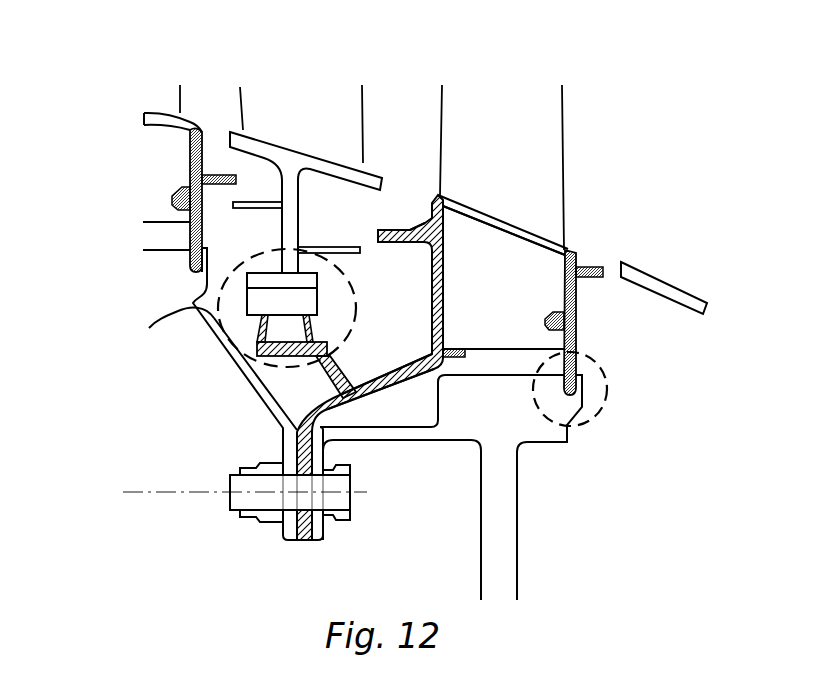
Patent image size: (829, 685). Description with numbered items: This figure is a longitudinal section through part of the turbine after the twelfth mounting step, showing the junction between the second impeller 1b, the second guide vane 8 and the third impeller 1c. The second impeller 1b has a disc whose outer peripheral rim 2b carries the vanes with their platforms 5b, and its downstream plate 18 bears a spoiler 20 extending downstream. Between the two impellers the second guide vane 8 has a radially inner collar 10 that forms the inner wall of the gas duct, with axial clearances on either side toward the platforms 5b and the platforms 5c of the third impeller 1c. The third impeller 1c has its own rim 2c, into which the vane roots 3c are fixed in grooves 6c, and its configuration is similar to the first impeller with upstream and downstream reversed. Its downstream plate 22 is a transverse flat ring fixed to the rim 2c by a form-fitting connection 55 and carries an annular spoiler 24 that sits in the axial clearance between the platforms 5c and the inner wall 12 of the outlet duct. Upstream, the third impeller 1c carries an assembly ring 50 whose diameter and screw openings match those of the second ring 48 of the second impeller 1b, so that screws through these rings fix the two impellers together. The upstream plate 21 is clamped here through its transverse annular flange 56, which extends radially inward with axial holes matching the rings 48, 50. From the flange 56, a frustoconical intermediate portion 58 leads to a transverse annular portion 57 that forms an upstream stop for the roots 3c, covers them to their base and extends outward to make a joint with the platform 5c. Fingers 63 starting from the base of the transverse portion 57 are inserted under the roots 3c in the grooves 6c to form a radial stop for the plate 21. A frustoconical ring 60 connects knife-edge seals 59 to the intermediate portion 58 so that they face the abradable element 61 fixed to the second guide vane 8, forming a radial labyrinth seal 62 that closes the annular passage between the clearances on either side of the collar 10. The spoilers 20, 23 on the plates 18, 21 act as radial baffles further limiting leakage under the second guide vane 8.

The second impeller 1b is at (114, 82).
The platform 5b is at (170, 119).
The spoiler 20 is at (213, 175).
The downstream plate 18 is at (172, 155).
The radially inner collar 10 is at (251, 145).
The second guide vane 8 is at (316, 106).
The spoiler 23 is at (418, 228).
The third impeller 1c is at (593, 159).
The root 3c is at (466, 237).
The platform 5c is at (520, 226).
The annular spoiler 24 is at (595, 266).
The inner wall of the output duct 12 is at (653, 285).
The transverse annular portion 57 is at (443, 258).
The outer peripheral rim 2b is at (175, 297).
The grooves 6c is at (494, 352).
The downstream plate 22 is at (593, 316).
The abradable element 61 is at (273, 298).
The frustoconical ring 60 is at (335, 360).
The knife-edge seals 59 is at (263, 322).
The fingers 63 is at (460, 358).
The form-fitting connection 55 is at (607, 403).
The radial labyrinth seal 62 is at (272, 362).
The outer peripheral rim 2c is at (517, 430).
The intermediate portion 58 is at (407, 385).
The upstream plate 21 is at (388, 418).
The second ring 48 is at (293, 525).
The transverse annular flange 56 is at (300, 527).
The assembly ring 50 is at (318, 527).